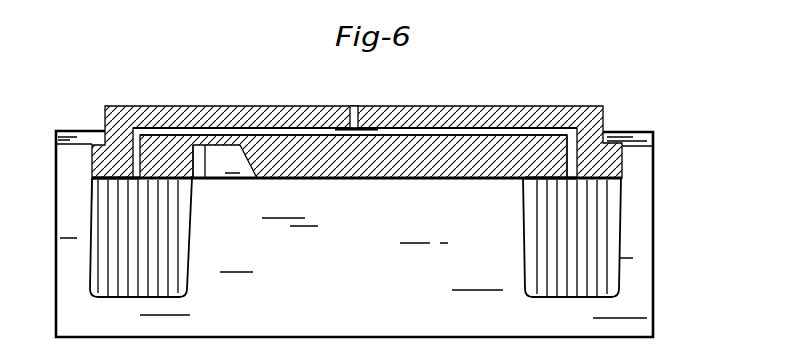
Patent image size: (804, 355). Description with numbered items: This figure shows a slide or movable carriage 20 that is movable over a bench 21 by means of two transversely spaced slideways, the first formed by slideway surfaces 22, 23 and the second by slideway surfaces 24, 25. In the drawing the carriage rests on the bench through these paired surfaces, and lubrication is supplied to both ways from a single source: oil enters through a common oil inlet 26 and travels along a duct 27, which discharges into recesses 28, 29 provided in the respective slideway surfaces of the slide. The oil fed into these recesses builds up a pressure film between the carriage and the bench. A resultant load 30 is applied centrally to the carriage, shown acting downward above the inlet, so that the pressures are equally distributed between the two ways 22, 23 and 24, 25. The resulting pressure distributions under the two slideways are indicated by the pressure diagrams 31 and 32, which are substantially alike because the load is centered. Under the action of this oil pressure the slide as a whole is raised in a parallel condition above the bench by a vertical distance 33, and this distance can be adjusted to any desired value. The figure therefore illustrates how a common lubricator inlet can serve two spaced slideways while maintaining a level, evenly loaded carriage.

The movable carriage 20 is at (213, 106).
The bench 21 is at (354, 234).
The slideway surface 22 is at (117, 180).
The slideway surface 23 is at (107, 183).
The slideway surface 24 is at (562, 172).
The slideway surface 25 is at (608, 188).
The common oil inlet 26 is at (367, 113).
The duct 27 is at (447, 132).
The recess 28 is at (528, 183).
The recess 29 is at (182, 184).
The resultant load 30 is at (355, 68).
The pressure diagram 31 is at (184, 229).
The pressure diagram 32 is at (540, 233).
The vertical distance 33 is at (90, 179).